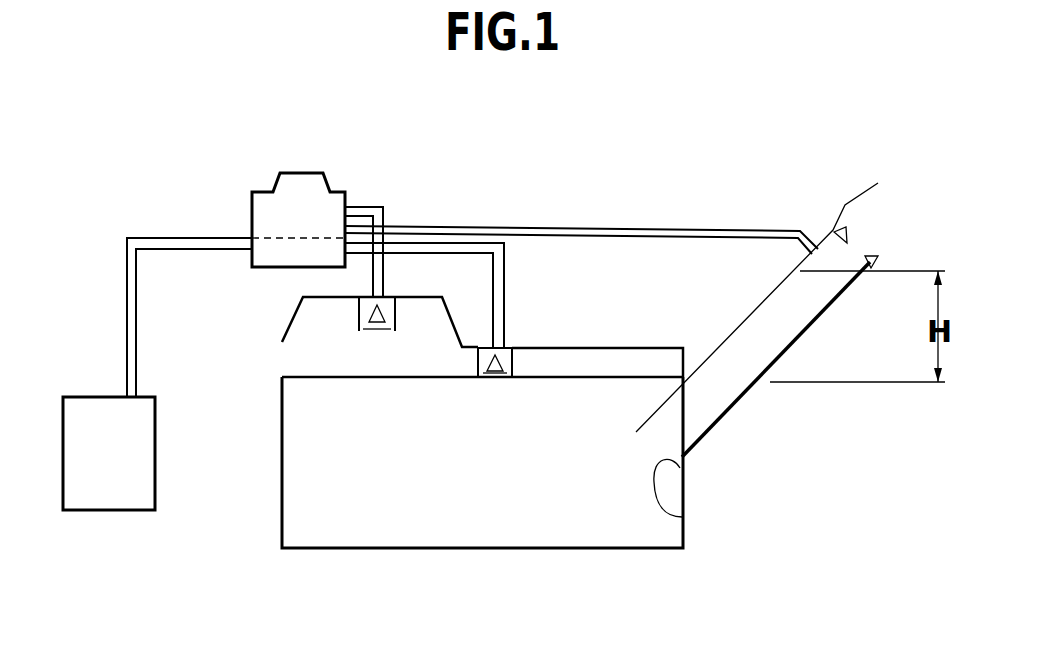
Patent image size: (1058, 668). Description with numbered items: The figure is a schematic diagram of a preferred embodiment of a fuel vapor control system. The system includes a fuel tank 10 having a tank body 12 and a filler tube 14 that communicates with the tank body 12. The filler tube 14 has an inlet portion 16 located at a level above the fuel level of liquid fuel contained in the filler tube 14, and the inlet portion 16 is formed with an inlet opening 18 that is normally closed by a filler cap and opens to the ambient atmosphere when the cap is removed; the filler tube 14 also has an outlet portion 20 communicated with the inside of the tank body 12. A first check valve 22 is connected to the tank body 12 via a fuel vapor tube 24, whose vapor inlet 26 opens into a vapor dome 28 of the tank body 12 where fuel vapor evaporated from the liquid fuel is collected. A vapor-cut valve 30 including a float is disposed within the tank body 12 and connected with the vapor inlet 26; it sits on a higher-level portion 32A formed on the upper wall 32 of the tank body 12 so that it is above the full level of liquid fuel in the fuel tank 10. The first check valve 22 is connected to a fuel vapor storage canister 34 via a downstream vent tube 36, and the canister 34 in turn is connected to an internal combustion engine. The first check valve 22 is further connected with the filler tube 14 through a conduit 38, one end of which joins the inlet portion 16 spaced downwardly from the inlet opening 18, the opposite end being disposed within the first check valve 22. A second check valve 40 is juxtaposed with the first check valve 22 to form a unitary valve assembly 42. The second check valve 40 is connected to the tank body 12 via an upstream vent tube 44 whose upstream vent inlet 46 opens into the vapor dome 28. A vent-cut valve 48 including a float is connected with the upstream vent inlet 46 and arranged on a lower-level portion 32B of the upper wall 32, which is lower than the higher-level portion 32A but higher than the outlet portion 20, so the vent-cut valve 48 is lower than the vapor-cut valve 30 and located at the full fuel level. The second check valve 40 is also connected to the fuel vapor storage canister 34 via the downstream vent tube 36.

The fuel tank 10 is at (616, 568).
The tank body 12 is at (455, 552).
The filler tube 14 is at (742, 388).
The inlet portion 16 is at (830, 238).
The inlet opening 18 is at (858, 247).
The outlet portion 20 is at (682, 517).
The first check valve 22 is at (308, 172).
The fuel vapor tube 24 is at (388, 213).
The vapor inlet 26 is at (384, 291).
The vapor dome 28 is at (433, 360).
The vapor-cut valve 30 is at (393, 320).
The upper wall 32 is at (672, 346).
The higher-level portion 32A is at (333, 299).
The lower-level portion 32B is at (605, 358).
The fuel vapor storage canister 34 is at (118, 511).
The downstream vent tube 36 is at (136, 349).
The conduit 38 is at (709, 228).
The second check valve 40 is at (277, 268).
The unitary valve assembly 42 is at (280, 156).
The upstream vent tube 44 is at (506, 286).
The upstream vent inlet 46 is at (506, 340).
The vent-cut valve 48 is at (514, 380).